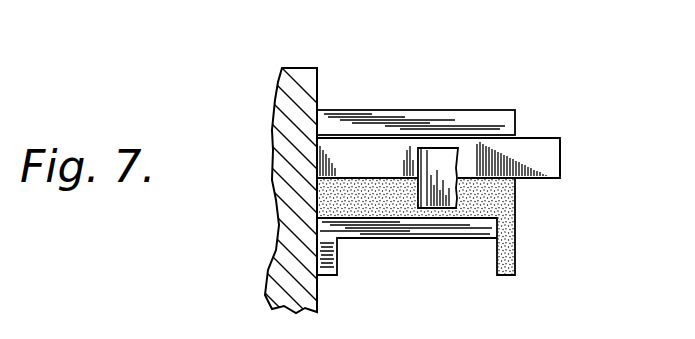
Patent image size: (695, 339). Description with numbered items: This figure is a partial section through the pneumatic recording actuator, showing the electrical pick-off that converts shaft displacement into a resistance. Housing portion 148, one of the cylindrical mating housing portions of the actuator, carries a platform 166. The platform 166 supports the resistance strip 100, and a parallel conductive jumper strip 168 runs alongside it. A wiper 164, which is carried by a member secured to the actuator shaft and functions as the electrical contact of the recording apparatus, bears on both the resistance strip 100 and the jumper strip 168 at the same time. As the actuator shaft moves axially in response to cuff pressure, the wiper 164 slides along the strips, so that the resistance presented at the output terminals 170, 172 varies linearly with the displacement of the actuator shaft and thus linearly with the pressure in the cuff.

The housing portion 148 is at (290, 238).
The platform 166 is at (373, 113).
The conductive jumper strip 168 is at (528, 148).
The output terminal 170 is at (561, 172).
The wiper 164 is at (445, 150).
The resistance strip 100 is at (386, 200).
The output terminal 172 is at (516, 271).